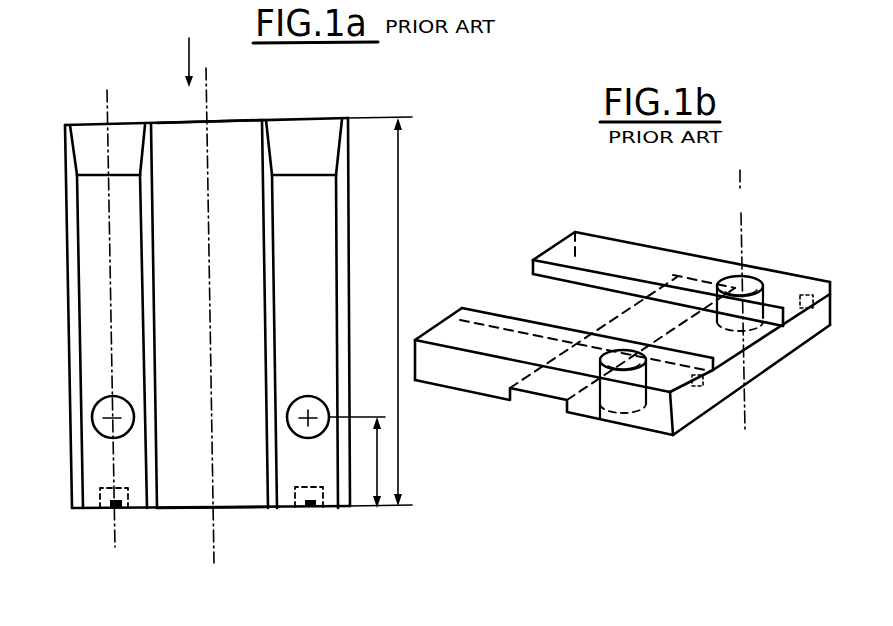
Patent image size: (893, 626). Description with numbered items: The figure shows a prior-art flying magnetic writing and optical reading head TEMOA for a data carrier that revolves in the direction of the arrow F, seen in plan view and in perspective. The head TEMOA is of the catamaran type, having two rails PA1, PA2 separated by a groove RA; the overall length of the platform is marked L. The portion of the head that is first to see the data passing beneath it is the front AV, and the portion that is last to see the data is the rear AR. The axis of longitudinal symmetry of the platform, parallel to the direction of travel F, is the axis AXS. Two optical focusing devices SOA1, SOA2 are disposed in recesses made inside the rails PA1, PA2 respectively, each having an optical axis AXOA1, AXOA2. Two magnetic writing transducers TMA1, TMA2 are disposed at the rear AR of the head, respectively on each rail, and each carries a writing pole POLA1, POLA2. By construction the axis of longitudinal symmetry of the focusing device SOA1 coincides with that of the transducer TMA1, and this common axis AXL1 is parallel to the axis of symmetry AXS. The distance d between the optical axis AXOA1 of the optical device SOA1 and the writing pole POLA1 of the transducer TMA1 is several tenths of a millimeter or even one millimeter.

In FIG. 1a, the flying magnetic writing and optical reading head TEMOA is at (90, 104).
In FIG. 1b, the flying magnetic writing and optical reading head TEMOA is at (595, 212).
In FIG. 1a, the direction of travel of the data carrier F is at (182, 62).
In FIG. 1a, the axis of longitudinal symmetry of the platform AXS is at (235, 88).
In FIG. 1a, the groove RA is at (187, 143).
In FIG. 1b, the groove RA is at (512, 298).
In FIG. 1a, the front AV is at (318, 113).
In FIG. 1a, the rear AR is at (341, 515).
In FIG. 1a, the length L is at (381, 311).
In FIG. 1a, the distance between optical axis and writing pole d is at (361, 462).
In FIG. 1a, the common axis of longitudinal symmetry AXL1 is at (108, 254).
In FIG. 1a, the first rail PA1 is at (65, 319).
In FIG. 1b, the first rail PA1 is at (490, 383).
In FIG. 1a, the second rail PA2 is at (368, 327).
In FIG. 1b, the second rail PA2 is at (677, 251).
In FIG. 1a, the optical axis of first optical device AXOA1 is at (113, 417).
In FIG. 1a, the optical axis of second optical device AXOA2 is at (308, 416).
In FIG. 1b, the optical axis of second optical device AXOA2 is at (741, 212).
In FIG. 1a, the first optical focusing device SOA1 is at (135, 428).
In FIG. 1b, the first optical focusing device SOA1 is at (613, 383).
In FIG. 1a, the second optical focusing device SOA2 is at (292, 435).
In FIG. 1b, the second optical focusing device SOA2 is at (740, 290).
In FIG. 1a, the first magnetic writing transducer TMA1 is at (105, 511).
In FIG. 1b, the first magnetic writing transducer TMA1 is at (691, 388).
In FIG. 1a, the second magnetic writing transducer TMA2 is at (317, 511).
In FIG. 1b, the second magnetic writing transducer TMA2 is at (810, 315).
In FIG. 1a, the writing pole of first magnetic transducer POLA1 is at (116, 511).
In FIG. 1a, the writing pole of second magnetic transducer POLA2 is at (302, 512).